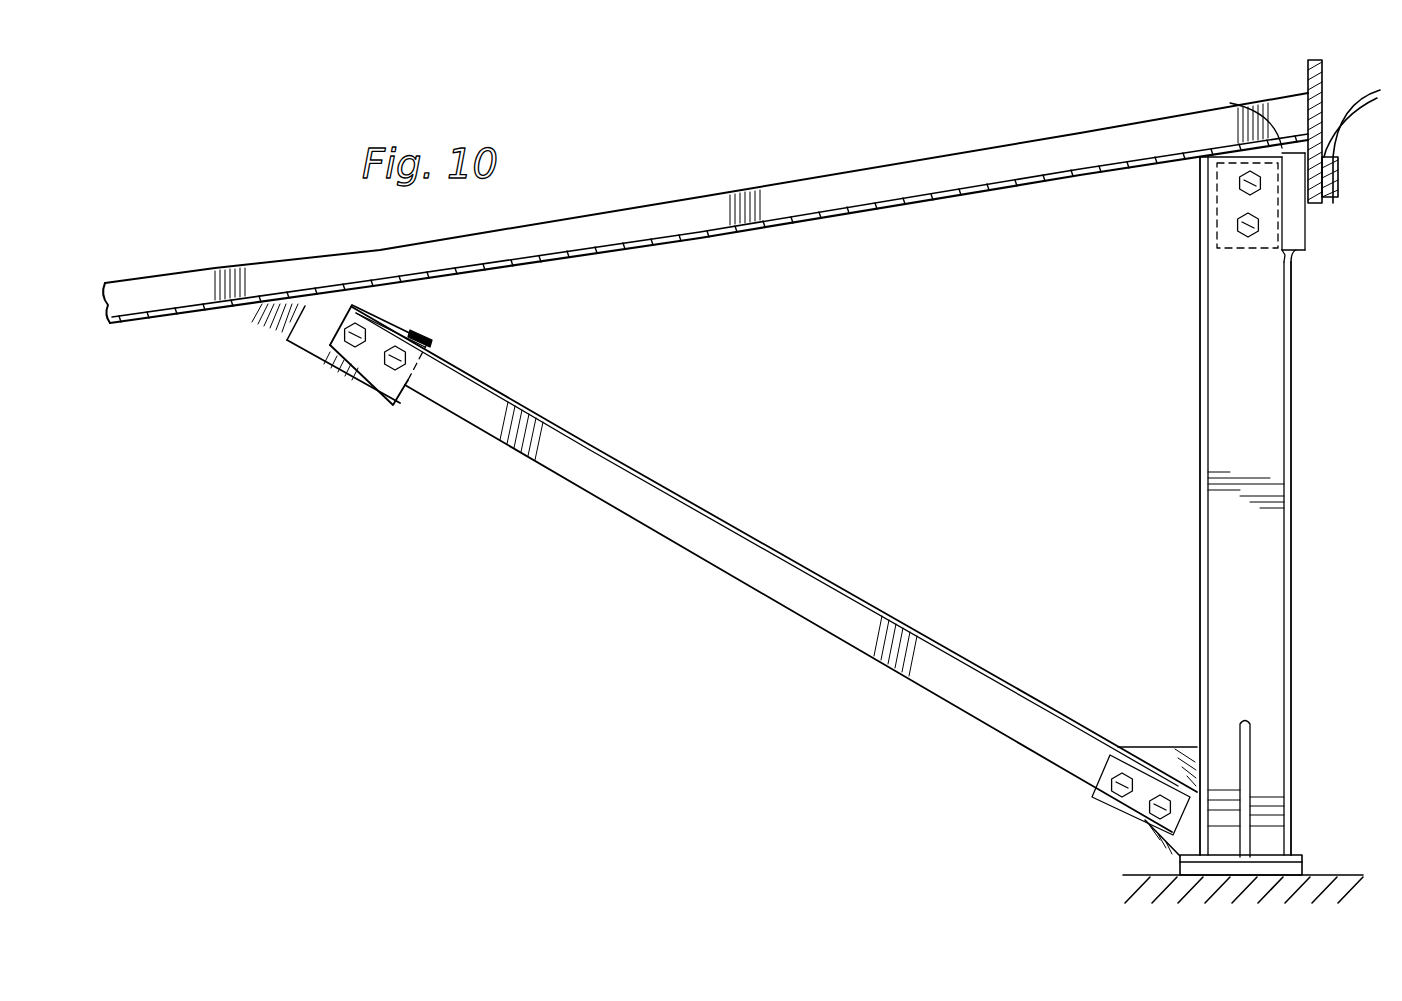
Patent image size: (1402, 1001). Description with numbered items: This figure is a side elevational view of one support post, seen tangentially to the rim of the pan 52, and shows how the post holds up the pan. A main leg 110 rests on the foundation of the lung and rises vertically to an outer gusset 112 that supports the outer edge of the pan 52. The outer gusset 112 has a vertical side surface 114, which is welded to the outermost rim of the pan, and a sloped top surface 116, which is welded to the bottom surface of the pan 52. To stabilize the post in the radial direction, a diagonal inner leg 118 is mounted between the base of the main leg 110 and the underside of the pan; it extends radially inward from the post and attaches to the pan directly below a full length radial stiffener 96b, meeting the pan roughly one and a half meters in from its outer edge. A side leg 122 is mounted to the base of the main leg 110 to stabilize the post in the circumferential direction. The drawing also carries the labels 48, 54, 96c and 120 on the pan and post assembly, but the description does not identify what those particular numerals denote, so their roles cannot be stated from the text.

The roof panel 48 is at (1330, 98).
The pan 52 is at (848, 216).
The support frame 54 is at (774, 528).
The full length radial stiffener 96b is at (862, 170).
The end plate 96c is at (1308, 66).
The main leg 110 is at (1205, 470).
The outer gusset 112 is at (1309, 243).
The vertical side surface 114 is at (1320, 195).
The sloped top surface 116 is at (1273, 127).
The diagonal inner leg 118 is at (648, 478).
The beam bracket 120 is at (277, 323).
The side legs 122 is at (290, 340).